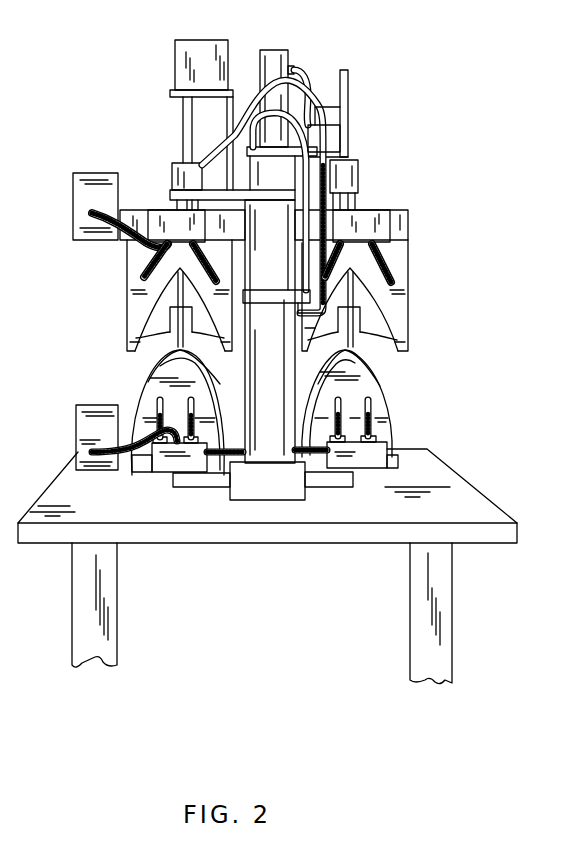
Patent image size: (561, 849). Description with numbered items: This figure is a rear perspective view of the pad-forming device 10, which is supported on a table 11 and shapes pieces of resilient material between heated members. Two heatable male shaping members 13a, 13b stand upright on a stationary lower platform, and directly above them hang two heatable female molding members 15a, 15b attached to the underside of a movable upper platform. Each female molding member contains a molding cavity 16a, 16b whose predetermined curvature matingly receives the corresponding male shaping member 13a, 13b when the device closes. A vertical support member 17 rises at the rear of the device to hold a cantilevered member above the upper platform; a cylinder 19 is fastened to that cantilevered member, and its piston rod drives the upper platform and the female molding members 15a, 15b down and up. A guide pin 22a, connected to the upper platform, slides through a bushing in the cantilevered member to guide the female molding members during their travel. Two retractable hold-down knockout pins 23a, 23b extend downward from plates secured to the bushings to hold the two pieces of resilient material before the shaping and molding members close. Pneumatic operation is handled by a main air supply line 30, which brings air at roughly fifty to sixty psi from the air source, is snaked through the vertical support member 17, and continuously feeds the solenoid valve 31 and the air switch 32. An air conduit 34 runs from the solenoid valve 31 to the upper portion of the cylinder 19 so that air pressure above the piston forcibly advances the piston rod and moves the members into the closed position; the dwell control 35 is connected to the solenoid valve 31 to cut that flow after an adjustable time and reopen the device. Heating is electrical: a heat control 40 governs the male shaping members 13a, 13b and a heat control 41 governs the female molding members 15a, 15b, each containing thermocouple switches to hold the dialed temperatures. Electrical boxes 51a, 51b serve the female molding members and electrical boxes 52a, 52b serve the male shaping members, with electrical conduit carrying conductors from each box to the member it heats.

The pad-forming device 10 is at (339, 28).
The table 11 is at (468, 476).
The heatable male shaping member 13a is at (382, 393).
The heatable male shaping member 13b is at (140, 397).
The heatable female molding member 15a is at (408, 252).
The heatable female molding member 15b is at (127, 297).
The molding cavity 16a is at (357, 303).
The molding cavity 16b is at (166, 310).
The vertical support member 17 is at (276, 435).
The cylinder 19 is at (285, 50).
The guide pin 22a is at (348, 78).
The hold-down knockout pin 23a is at (375, 355).
The hold-down knockout pin 23b is at (160, 352).
The main air supply line 30 is at (309, 94).
The solenoid valve 31 is at (336, 136).
The air switch 32 is at (302, 288).
The air conduit 34 is at (298, 72).
The dwell control 35 is at (175, 55).
The heat control 40 is at (76, 430).
The heat control 41 is at (73, 200).
The electrical box 51a is at (388, 226).
The electrical box 51b is at (152, 228).
The electrical box 52a is at (380, 452).
The electrical box 52b is at (165, 462).